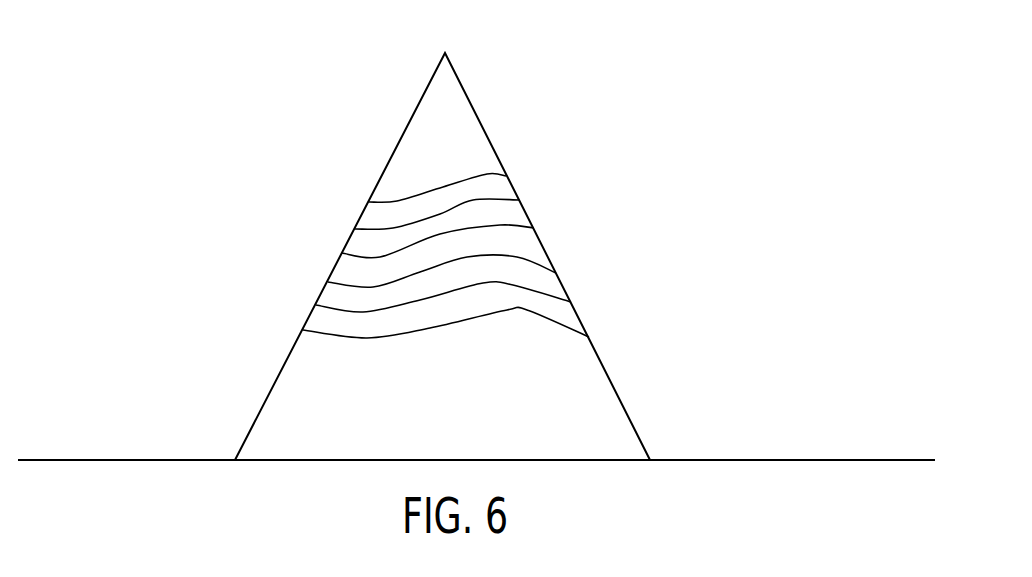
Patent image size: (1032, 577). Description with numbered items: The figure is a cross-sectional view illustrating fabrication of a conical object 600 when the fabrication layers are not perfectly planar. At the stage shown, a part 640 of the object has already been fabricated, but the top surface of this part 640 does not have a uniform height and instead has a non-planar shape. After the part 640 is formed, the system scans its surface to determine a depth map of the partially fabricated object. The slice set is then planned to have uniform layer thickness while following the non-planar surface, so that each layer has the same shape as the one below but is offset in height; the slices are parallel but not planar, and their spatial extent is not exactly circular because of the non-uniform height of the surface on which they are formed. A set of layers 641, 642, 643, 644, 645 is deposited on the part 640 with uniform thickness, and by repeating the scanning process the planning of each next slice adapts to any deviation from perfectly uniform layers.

The conical object 600 is at (476, 256).
The part of the object 640 is at (605, 401).
The layer 641 is at (562, 312).
The layer 642 is at (547, 282).
The layer 643 is at (528, 245).
The layer 644 is at (518, 218).
The layer 645 is at (503, 182).